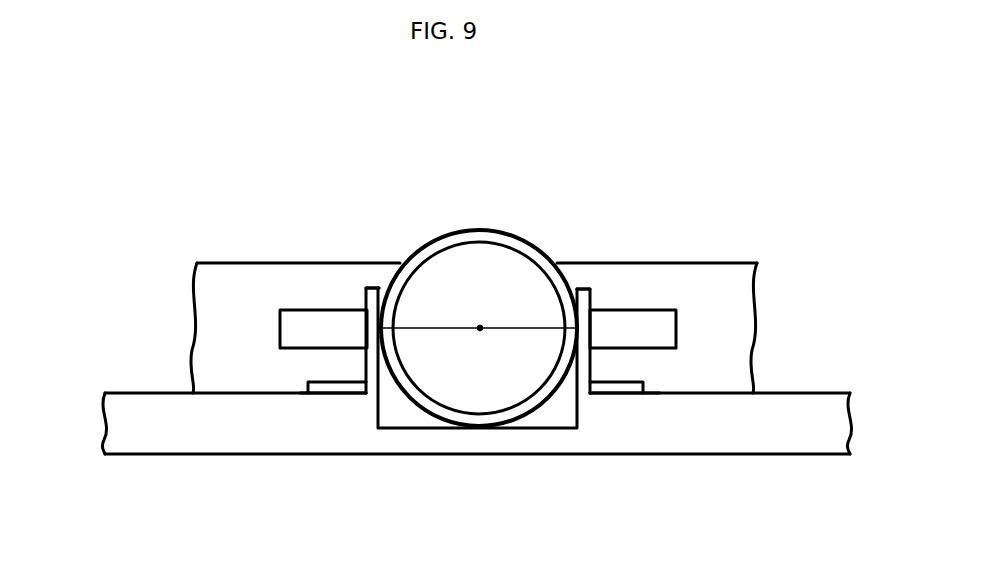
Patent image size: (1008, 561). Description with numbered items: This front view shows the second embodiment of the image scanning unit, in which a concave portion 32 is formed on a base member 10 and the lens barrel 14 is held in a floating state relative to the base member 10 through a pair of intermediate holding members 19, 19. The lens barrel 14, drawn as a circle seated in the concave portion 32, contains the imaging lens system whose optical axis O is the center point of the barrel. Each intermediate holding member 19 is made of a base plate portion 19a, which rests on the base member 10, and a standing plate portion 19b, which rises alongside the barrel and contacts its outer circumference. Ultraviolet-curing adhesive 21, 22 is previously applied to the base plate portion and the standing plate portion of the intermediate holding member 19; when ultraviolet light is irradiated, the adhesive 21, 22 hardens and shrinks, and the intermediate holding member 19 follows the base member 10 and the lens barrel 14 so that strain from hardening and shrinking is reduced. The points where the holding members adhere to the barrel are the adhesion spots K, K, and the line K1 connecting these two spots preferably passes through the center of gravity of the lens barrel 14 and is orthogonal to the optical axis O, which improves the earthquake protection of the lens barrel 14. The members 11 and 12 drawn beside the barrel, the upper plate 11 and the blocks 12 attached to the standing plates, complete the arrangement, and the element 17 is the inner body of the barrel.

The base member 10 is at (779, 445).
The upper plate 11 is at (232, 278).
The support member 12 is at (676, 332).
The lens barrel 14 is at (490, 222).
The ball 17 is at (453, 262).
The intermediate holding member 19 is at (473, 330).
The base plate portion 19a is at (320, 380).
The standing plate portion 19b is at (367, 293).
The ultraviolet-curing adhesive 21 is at (479, 307).
The adhesion spot K is at (405, 307).
The ultraviolet-curing adhesive 22 is at (343, 394).
The concave portion 32 is at (533, 427).
The line connecting the adhesion spots K1 is at (447, 330).
The optical axis O is at (480, 331).